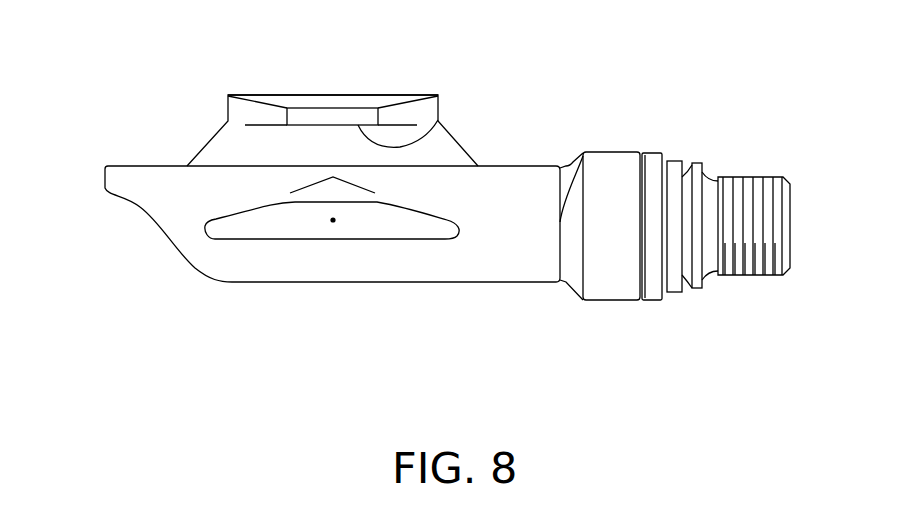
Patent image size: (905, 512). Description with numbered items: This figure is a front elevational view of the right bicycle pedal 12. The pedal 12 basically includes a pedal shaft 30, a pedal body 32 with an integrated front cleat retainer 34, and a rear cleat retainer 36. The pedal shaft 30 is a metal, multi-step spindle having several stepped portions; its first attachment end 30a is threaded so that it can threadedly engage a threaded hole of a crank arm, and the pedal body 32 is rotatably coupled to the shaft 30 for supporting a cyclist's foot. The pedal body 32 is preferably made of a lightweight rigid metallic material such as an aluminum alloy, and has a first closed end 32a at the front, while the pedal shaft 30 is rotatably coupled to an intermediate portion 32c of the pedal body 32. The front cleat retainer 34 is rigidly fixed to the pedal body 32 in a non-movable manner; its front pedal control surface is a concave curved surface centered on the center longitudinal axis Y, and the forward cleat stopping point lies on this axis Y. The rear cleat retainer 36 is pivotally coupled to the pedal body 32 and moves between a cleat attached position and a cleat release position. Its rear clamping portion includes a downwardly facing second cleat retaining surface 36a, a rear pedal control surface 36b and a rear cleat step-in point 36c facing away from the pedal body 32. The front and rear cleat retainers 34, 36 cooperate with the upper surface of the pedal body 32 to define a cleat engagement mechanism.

The bicycle pedal 12 is at (545, 86).
The pedal shaft 30 is at (696, 289).
The first attachment end 30a is at (742, 276).
The pedal body 32 is at (135, 215).
The first closed end 32a is at (448, 182).
The intermediate portion 32c is at (408, 282).
The front cleat retainer 34 is at (280, 183).
The rear cleat retainer 36 is at (413, 92).
The second cleat retaining surface 36a is at (440, 121).
The rear pedal control surface 36b is at (312, 118).
The rear cleat step-in point 36c is at (330, 93).
The center longitudinal axis Y is at (333, 222).